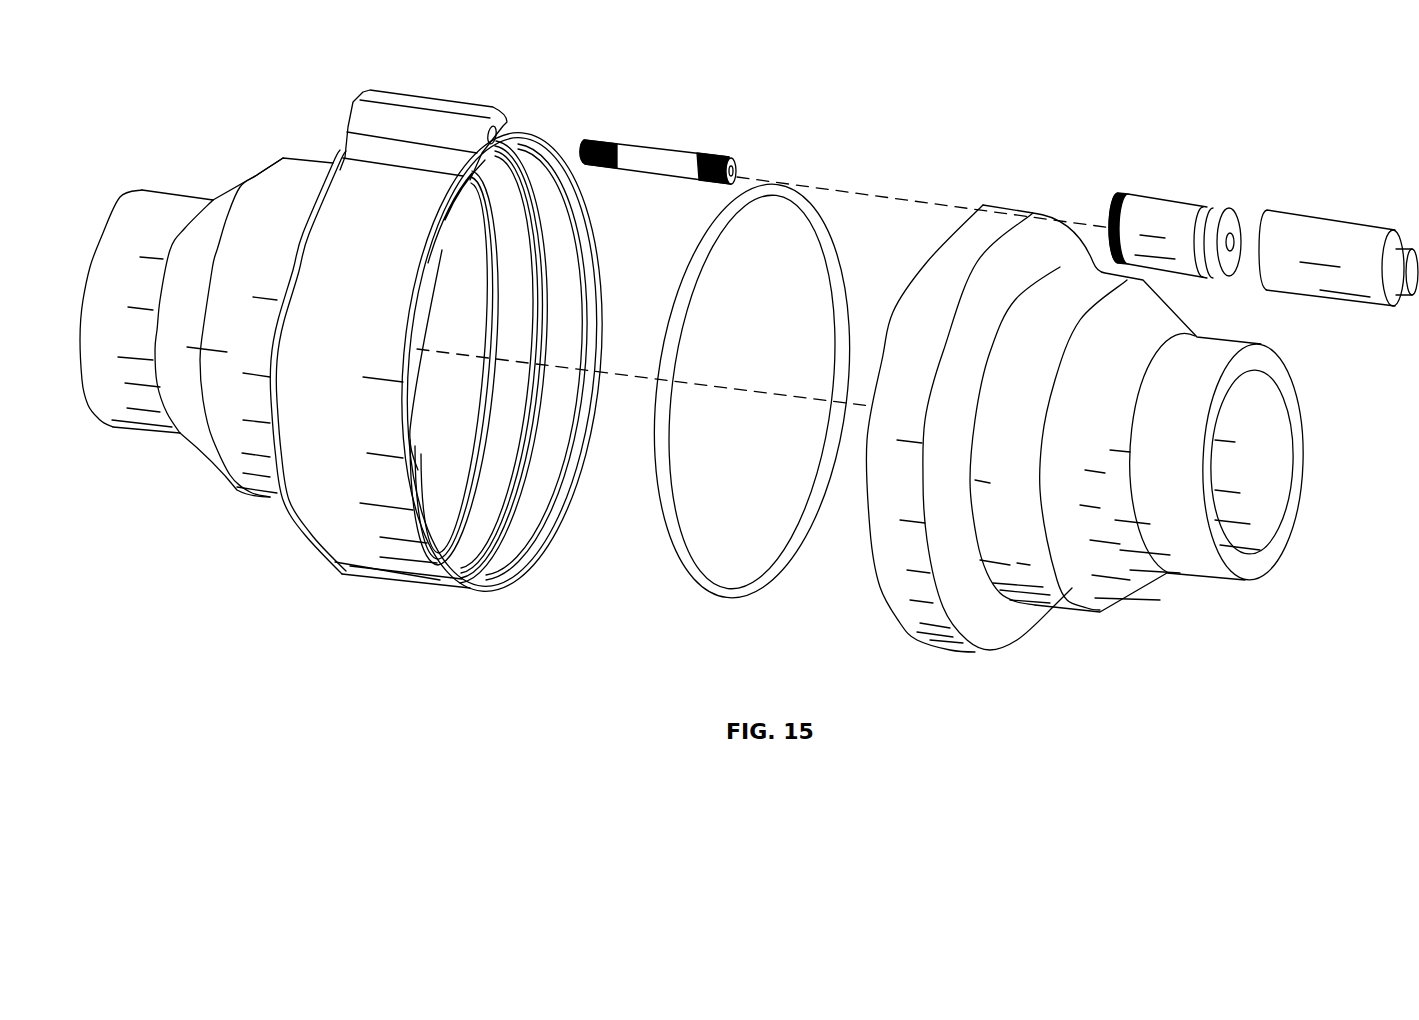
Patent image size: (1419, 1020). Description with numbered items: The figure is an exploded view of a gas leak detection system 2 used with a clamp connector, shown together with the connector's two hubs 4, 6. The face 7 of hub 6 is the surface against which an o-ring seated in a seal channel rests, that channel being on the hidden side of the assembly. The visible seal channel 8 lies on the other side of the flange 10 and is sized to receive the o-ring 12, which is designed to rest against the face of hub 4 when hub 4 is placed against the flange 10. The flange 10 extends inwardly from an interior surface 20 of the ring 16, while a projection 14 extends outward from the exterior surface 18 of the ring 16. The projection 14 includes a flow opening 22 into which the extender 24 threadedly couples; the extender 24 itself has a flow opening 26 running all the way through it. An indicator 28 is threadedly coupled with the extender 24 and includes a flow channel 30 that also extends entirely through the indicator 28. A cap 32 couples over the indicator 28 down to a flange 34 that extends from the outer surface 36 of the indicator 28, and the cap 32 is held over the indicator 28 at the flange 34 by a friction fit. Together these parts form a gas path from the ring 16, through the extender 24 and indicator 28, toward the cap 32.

The gas leak detection system 2 is at (1055, 90).
The hub 4 is at (1053, 607).
The hub 6 is at (303, 173).
The face 7 is at (490, 227).
The seal channel 8 is at (473, 520).
The flange 10 is at (490, 460).
The o-ring 12 is at (733, 593).
The projection 14 is at (430, 123).
The ring 16 is at (467, 584).
The exterior surface 18 is at (367, 240).
The interior surface 20 is at (502, 361).
The flow opening 22 is at (497, 135).
The extender 24 is at (660, 155).
The flow opening 26 is at (737, 170).
The indicator 28 is at (1163, 213).
The flow channel 30 is at (1237, 240).
The cap 32 is at (1333, 233).
The flange 34 is at (1125, 190).
The outer surface 36 is at (1148, 238).